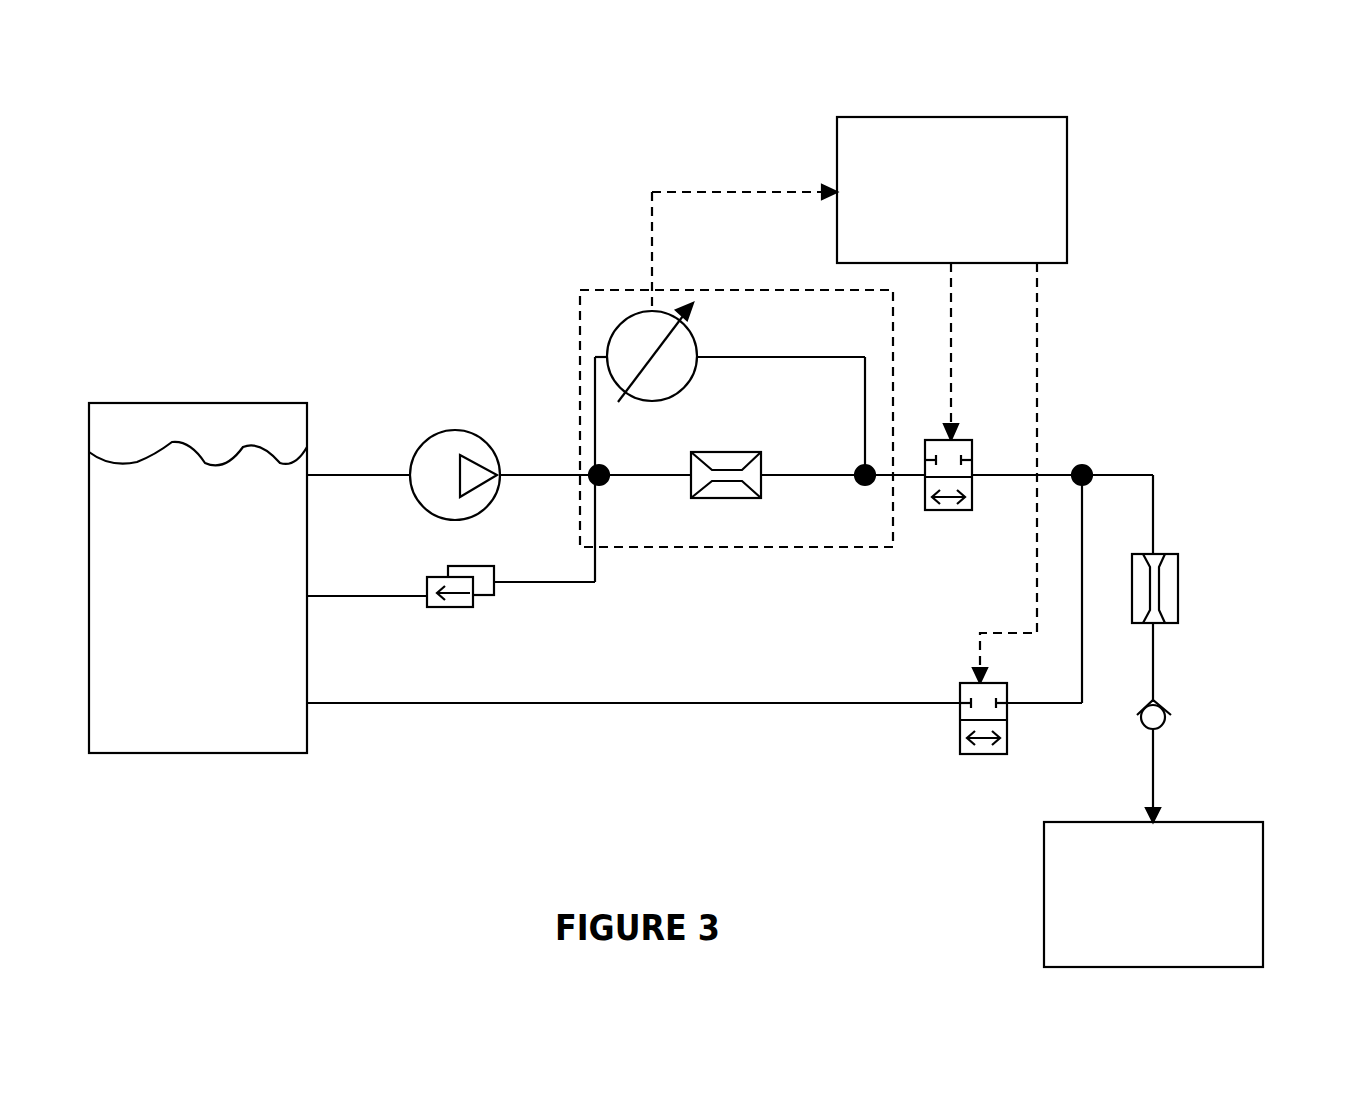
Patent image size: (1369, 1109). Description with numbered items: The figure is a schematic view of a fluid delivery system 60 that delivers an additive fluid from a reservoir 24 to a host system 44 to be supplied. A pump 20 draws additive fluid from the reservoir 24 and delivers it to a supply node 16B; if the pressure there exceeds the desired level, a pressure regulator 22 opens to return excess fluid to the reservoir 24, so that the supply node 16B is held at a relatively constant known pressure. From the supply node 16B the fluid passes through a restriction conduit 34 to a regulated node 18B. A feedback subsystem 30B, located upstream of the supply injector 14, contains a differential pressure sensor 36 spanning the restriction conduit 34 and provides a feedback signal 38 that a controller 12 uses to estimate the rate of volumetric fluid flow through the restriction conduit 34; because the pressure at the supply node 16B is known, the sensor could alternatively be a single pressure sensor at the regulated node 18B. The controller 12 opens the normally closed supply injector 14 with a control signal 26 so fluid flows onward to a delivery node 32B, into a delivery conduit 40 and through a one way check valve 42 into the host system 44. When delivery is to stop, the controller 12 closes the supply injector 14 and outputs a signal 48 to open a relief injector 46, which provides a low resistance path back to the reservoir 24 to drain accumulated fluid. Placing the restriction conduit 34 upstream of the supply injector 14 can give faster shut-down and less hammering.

The controller 12 is at (837, 145).
The supply injector 14 is at (944, 510).
The supply node 16B is at (603, 483).
The regulated node 18B is at (862, 483).
The pump 20 is at (455, 430).
The pressure regulator 22 is at (450, 607).
The reservoir 24 is at (195, 753).
The control signal 26 is at (952, 375).
The feedback subsystem 30B is at (580, 305).
The delivery node 32B is at (1090, 468).
The restriction conduit 34 is at (724, 498).
The differential pressure sensor 36 is at (620, 313).
The feedback signal 38 is at (652, 192).
The delivery conduit 40 is at (1178, 590).
The one way check valve 42 is at (1165, 718).
The host system 44 is at (1044, 895).
The relief injector 46 is at (984, 754).
The signal 48 is at (1037, 405).
The fluid delivery system 60 is at (300, 212).